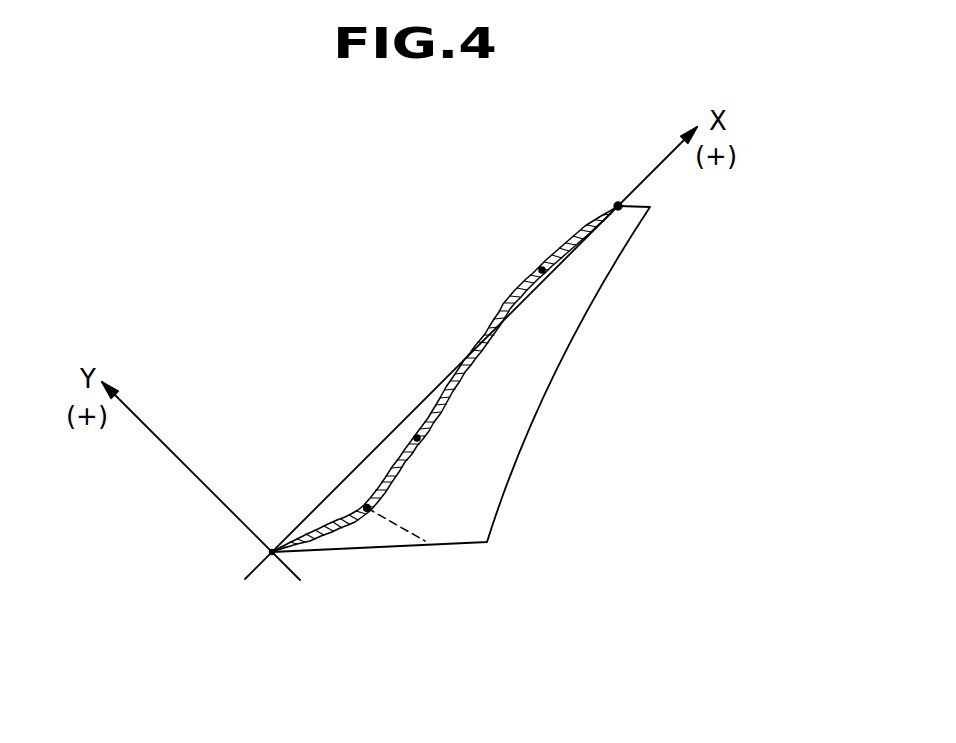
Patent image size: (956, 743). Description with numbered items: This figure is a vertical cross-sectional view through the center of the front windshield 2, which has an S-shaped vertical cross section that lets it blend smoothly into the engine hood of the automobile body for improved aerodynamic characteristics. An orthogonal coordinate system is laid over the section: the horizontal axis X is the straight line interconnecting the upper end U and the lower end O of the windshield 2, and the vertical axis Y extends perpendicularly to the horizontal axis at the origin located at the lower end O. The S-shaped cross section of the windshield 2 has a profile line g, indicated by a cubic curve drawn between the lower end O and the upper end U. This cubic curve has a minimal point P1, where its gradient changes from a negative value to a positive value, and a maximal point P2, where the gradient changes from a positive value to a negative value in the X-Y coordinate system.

The front windshield 2 is at (538, 373).
The profile line g is at (417, 438).
The minimal point P1 is at (365, 507).
The maximal point P2 is at (542, 270).
The upper end U is at (608, 194).
The lower end O is at (270, 575).